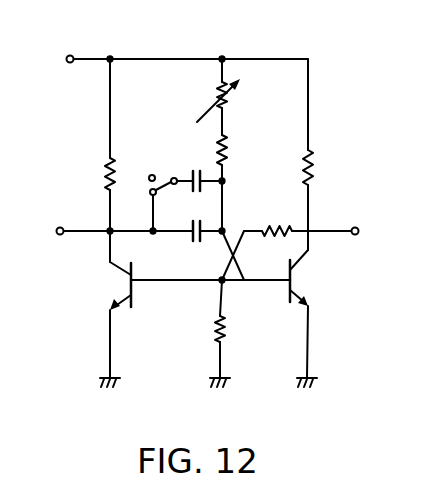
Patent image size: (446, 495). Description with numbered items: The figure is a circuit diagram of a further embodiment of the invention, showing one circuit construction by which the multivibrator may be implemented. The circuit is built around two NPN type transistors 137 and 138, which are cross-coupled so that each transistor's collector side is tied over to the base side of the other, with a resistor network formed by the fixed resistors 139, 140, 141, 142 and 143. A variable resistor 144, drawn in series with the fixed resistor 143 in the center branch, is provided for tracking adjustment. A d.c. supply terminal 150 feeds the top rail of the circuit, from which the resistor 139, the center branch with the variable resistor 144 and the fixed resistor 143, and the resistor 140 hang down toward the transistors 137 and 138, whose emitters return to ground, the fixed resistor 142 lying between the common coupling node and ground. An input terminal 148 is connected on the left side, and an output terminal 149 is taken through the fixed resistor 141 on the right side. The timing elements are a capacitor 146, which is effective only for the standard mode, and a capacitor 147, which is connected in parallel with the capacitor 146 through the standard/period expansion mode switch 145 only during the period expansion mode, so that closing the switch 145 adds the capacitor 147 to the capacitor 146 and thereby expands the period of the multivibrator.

The NPN type transistor 137 is at (116, 292).
The NPN type transistor 138 is at (302, 285).
The fixed resistor 139 is at (104, 168).
The fixed resistor 140 is at (314, 165).
The fixed resistor 141 is at (275, 226).
The fixed resistor 142 is at (226, 330).
The fixed resistor 143 is at (228, 150).
The variable resistor 144 is at (228, 96).
The standard/period expansion mode switch 145 is at (173, 177).
The capacitor 146 is at (201, 228).
The capacitor 147 is at (201, 179).
The input terminal 148 is at (61, 227).
The output terminal 149 is at (358, 228).
The d.c. supply terminal 150 is at (82, 42).